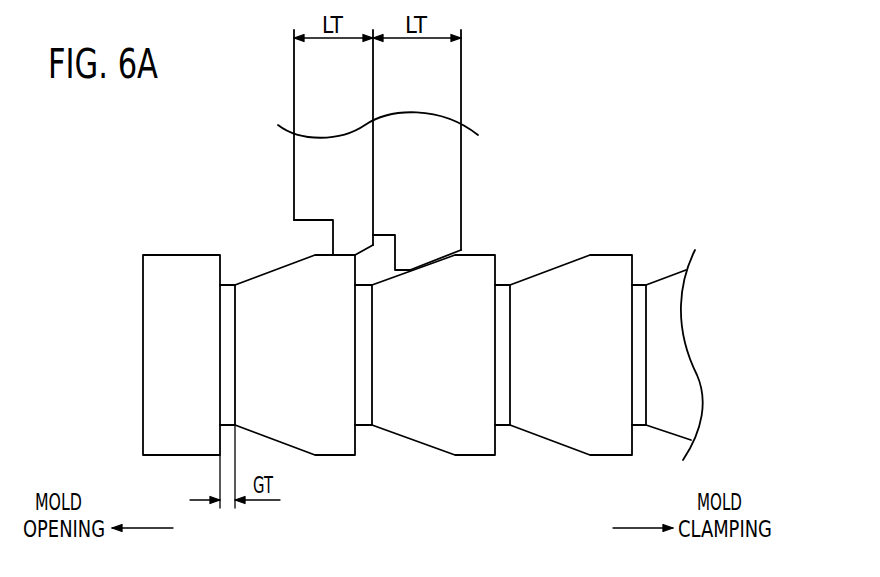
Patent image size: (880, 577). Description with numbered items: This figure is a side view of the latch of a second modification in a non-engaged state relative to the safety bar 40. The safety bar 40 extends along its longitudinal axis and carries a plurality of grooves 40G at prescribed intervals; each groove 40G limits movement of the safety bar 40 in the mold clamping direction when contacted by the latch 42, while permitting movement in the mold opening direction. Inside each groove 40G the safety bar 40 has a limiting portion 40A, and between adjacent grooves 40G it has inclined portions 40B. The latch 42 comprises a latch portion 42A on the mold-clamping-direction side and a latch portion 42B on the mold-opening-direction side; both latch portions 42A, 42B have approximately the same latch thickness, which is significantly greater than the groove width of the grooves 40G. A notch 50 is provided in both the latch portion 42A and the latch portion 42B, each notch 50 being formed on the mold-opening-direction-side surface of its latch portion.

The safety bar 40 is at (608, 428).
The limiting portion 40A is at (357, 272).
The inclined portion 40B is at (287, 267).
The groove 40G is at (234, 261).
The latch 42 is at (425, 150).
The latch portion 42A is at (443, 182).
The latch portion 42B is at (332, 180).
The notch 50 is at (301, 242).